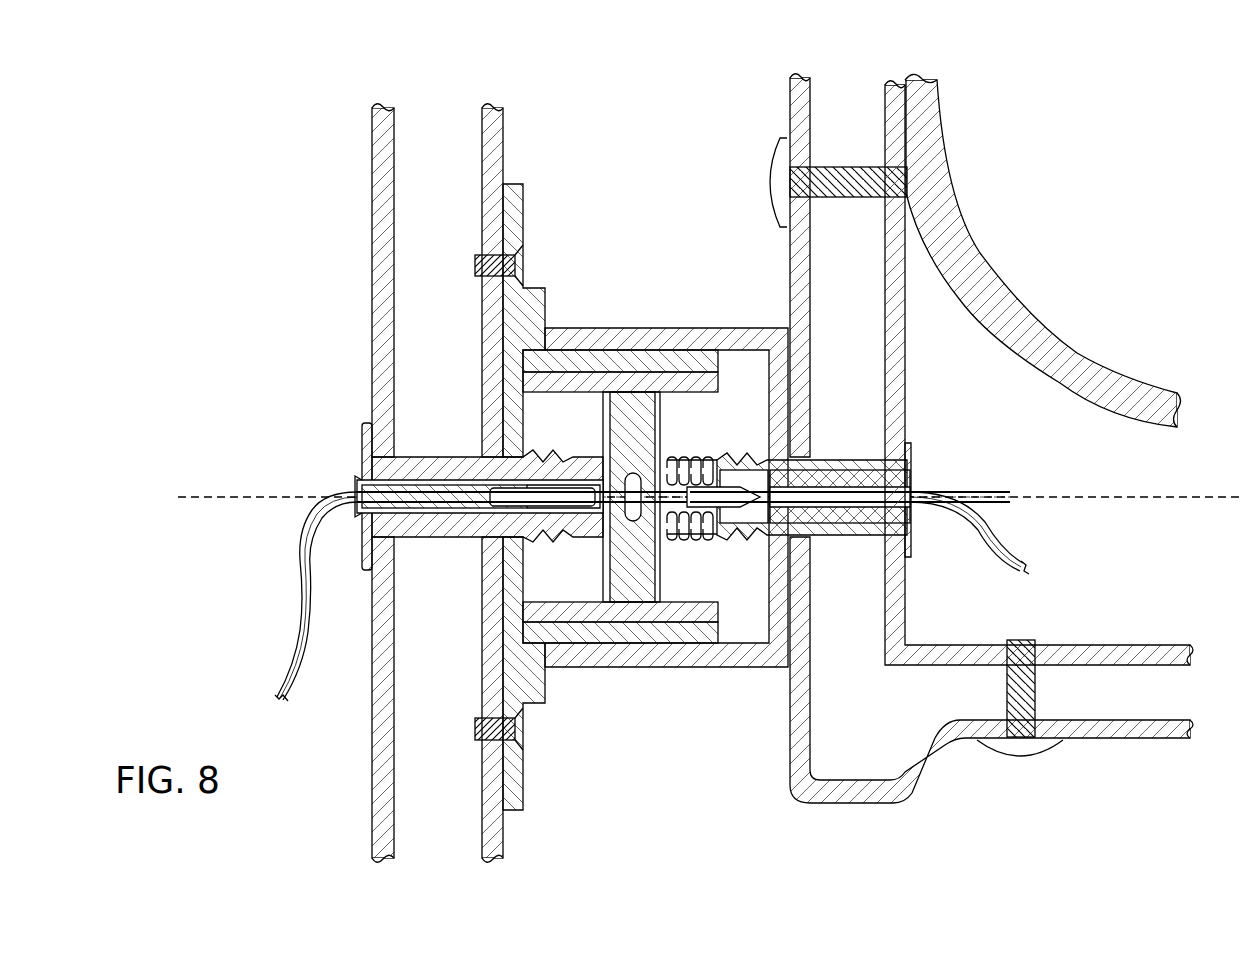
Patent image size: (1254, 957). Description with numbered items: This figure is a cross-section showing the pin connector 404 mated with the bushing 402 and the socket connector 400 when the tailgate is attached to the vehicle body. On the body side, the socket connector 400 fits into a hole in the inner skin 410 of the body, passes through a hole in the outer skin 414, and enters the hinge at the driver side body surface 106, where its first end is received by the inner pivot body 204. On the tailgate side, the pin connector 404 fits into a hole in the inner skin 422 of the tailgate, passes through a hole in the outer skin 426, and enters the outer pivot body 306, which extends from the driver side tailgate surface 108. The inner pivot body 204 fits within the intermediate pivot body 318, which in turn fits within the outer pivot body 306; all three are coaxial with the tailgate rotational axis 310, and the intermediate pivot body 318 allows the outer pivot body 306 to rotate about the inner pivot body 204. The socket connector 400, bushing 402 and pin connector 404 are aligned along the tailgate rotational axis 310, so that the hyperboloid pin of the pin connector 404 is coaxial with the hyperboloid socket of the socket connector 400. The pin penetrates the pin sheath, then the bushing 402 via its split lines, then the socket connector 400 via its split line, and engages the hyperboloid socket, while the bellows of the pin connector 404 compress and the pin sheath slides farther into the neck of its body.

The driver side body surface 106 is at (504, 167).
The driver side tailgate surface 108 is at (790, 125).
The inner pivot body 204 is at (557, 393).
The outer pivot body 306 is at (665, 342).
The tailgate rotational axis 310 is at (198, 497).
The intermediate pivot body 318 is at (578, 362).
The socket connector 400 is at (362, 442).
The bushing 402 is at (665, 432).
The pin connector 404 is at (907, 440).
The inner skin 410 is at (372, 135).
The outer skin 414 is at (503, 126).
The inner skin 422 is at (907, 322).
The outer skin 426 is at (790, 275).